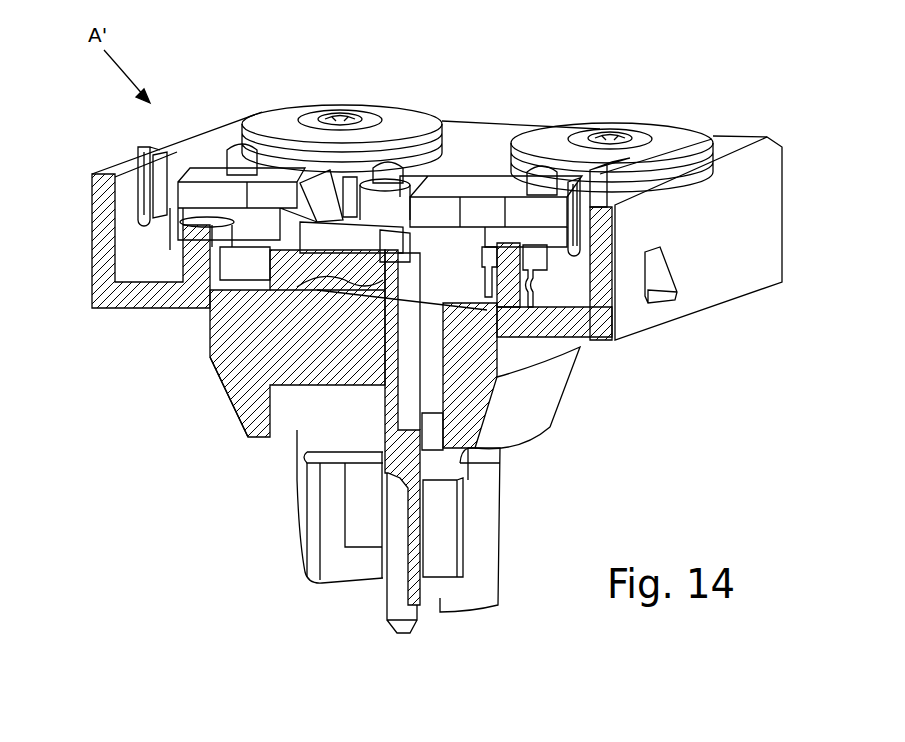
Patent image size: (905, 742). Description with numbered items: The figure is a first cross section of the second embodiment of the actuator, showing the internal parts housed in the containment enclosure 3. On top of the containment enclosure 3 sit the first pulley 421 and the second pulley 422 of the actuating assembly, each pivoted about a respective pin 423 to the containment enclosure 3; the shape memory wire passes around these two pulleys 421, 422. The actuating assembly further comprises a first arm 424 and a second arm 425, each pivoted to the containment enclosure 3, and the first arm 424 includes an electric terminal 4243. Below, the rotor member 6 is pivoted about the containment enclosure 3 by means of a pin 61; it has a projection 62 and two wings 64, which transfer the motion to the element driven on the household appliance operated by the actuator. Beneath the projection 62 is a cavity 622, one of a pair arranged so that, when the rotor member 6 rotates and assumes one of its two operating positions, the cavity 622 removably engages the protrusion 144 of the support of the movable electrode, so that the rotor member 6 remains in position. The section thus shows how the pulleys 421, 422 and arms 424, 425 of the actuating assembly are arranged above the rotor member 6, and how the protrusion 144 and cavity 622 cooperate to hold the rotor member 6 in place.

The containment enclosure 3 is at (763, 278).
The rotor member 6 is at (262, 548).
The pin 61 is at (393, 183).
The projection 62 is at (367, 257).
The wings 64 is at (347, 572).
The protrusion 144 is at (312, 290).
The first pulley 421 is at (432, 110).
The second pulley 422 is at (693, 136).
The pins 423 is at (343, 117).
The first arm 424 is at (207, 190).
The second arm 425 is at (545, 258).
The cavity 622 is at (443, 303).
The electric terminal 4243 is at (142, 165).